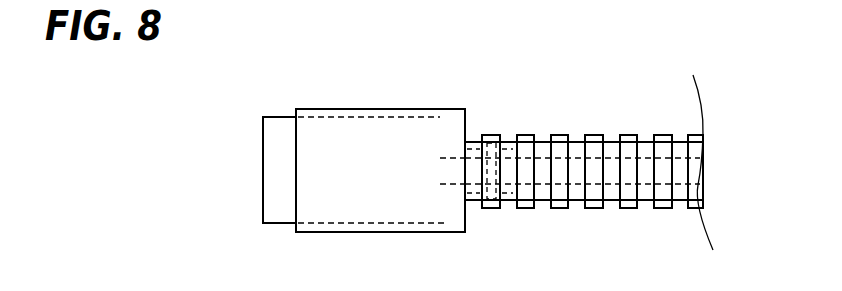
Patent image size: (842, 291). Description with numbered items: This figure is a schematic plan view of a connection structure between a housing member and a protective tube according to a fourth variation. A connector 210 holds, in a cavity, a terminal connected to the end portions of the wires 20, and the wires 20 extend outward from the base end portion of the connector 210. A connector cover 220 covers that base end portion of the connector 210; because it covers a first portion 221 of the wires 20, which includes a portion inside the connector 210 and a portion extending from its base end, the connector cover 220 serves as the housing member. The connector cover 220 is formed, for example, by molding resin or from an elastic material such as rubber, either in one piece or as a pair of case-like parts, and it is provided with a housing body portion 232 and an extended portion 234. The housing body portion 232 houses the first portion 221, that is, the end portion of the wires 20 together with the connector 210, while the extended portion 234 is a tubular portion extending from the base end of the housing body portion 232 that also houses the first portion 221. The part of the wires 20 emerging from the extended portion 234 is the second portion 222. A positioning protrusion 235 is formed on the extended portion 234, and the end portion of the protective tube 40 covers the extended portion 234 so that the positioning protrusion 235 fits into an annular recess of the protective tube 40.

The connector 210 is at (281, 117).
The connector cover 220 is at (453, 232).
The housing body portion 232 is at (456, 108).
The first portion 221 is at (455, 183).
The second portion 222 is at (575, 200).
The extended portion 234 is at (508, 143).
The positioning protrusion 235 is at (490, 142).
The protective tube 40 is at (629, 135).
The wires 20 is at (679, 201).